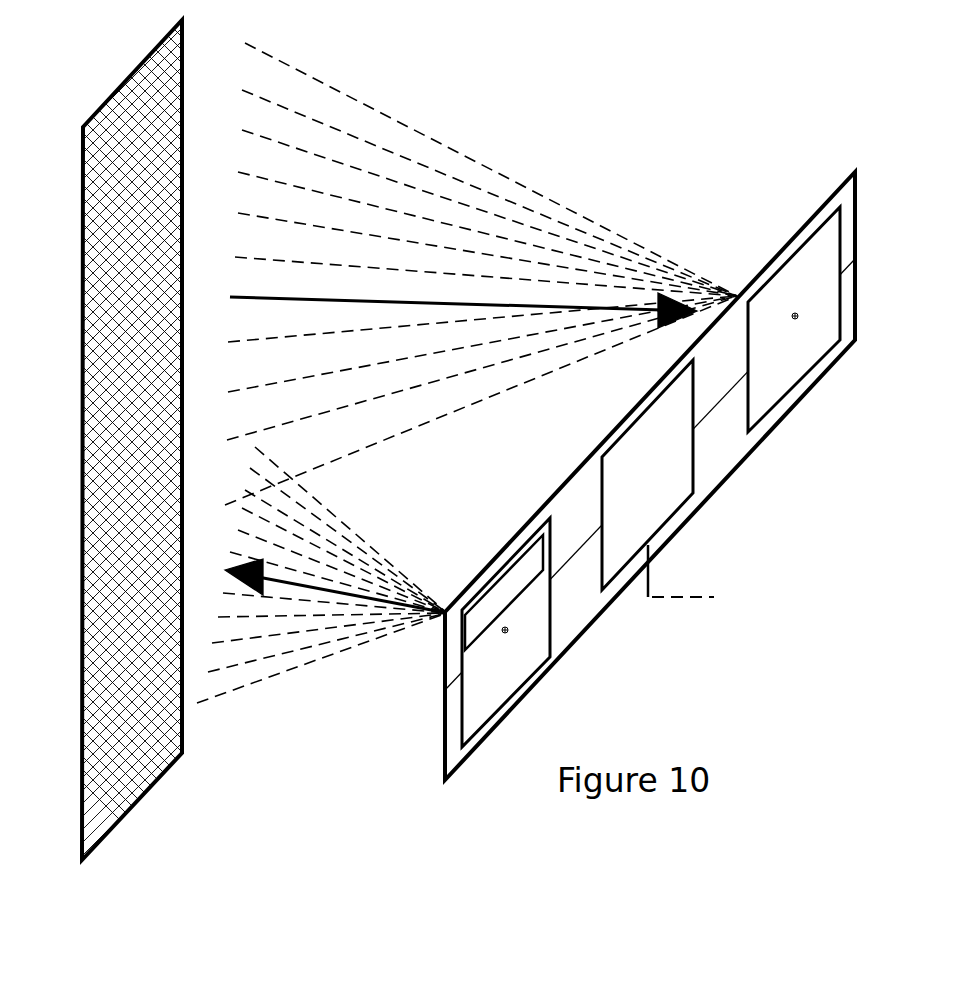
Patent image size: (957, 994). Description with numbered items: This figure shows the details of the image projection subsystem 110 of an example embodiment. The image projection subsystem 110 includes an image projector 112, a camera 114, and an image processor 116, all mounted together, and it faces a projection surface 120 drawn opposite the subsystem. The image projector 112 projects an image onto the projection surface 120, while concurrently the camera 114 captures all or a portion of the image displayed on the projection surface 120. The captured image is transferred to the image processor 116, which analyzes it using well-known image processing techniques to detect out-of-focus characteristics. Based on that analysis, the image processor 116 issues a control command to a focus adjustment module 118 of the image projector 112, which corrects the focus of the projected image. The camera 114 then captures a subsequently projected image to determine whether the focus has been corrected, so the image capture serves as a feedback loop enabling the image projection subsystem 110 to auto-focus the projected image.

The image projection subsystem 110 is at (838, 189).
The image projector 112 is at (553, 607).
The camera 114 is at (843, 273).
The image processor 116 is at (712, 467).
The focus adjustment module 118 is at (523, 566).
The projection surface 120 is at (138, 806).